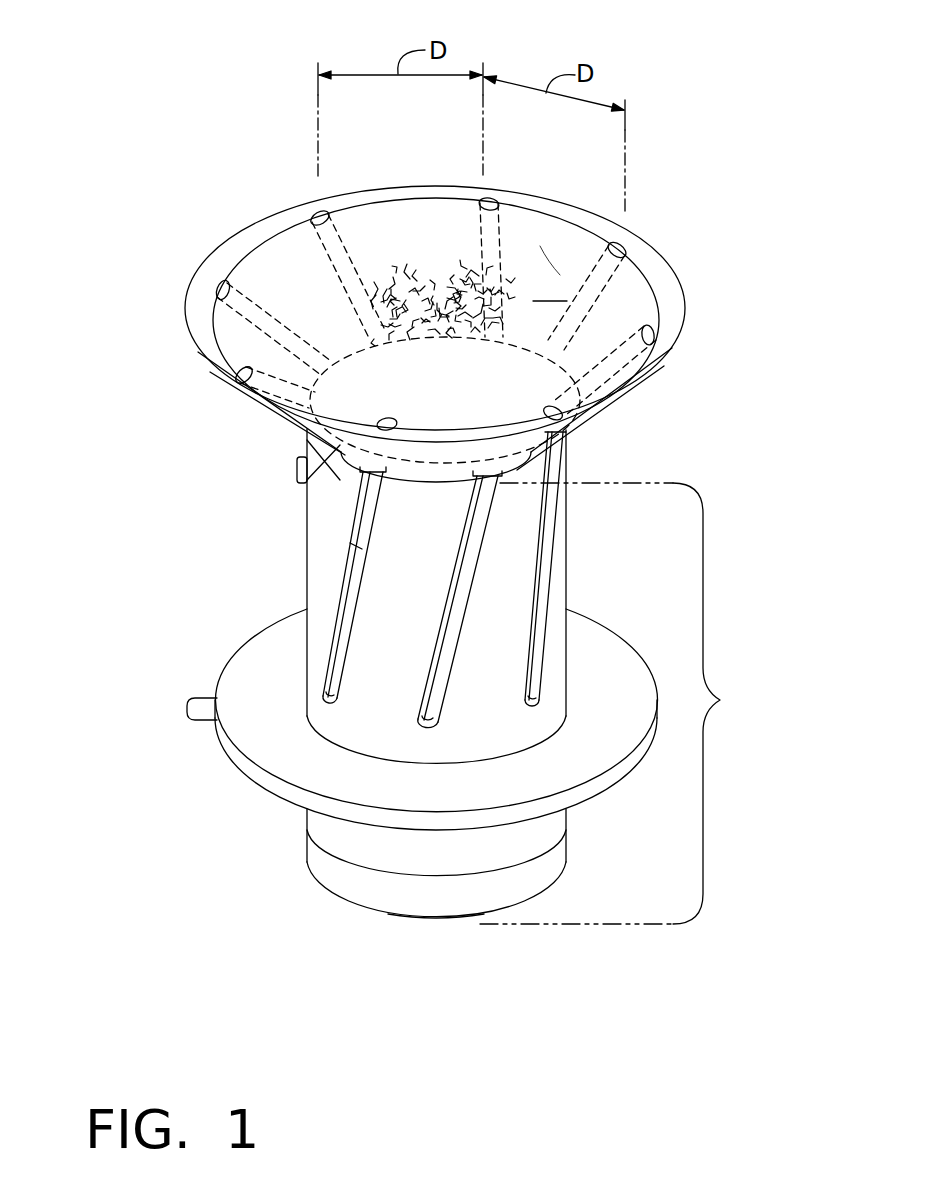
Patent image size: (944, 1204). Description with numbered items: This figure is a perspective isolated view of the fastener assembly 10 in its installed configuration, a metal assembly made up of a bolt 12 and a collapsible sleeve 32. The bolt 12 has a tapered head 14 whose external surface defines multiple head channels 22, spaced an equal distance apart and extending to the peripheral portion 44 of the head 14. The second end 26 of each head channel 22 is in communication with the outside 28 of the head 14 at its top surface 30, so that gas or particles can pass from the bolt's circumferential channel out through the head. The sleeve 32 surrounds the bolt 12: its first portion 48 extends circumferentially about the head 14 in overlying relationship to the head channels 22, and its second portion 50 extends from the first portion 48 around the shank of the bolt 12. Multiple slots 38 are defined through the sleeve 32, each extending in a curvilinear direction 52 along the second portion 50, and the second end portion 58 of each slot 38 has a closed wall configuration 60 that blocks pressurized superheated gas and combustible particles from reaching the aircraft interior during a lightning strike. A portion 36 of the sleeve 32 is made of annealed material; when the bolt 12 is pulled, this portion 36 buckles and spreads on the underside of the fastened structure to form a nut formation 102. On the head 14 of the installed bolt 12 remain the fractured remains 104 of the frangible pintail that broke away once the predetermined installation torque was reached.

The fastener assembly 10 is at (243, 132).
The bolt 12 is at (433, 225).
The head 14 is at (550, 242).
The head channels 22 is at (345, 248).
The second end 26 is at (328, 219).
The outside 28 is at (550, 289).
The top surface 30 is at (592, 203).
The sleeve 32 is at (578, 585).
The portion 36 is at (187, 710).
The slots 38 is at (357, 503).
The peripheral portion 44 is at (266, 258).
The first portion 48 is at (297, 470).
The second portion 50 is at (722, 700).
The curvilinear direction 52 is at (355, 546).
The second end portion 58 is at (308, 710).
The closed wall configuration 60 is at (328, 688).
The nut formation 102 is at (290, 798).
The fractured remains 104 is at (503, 238).